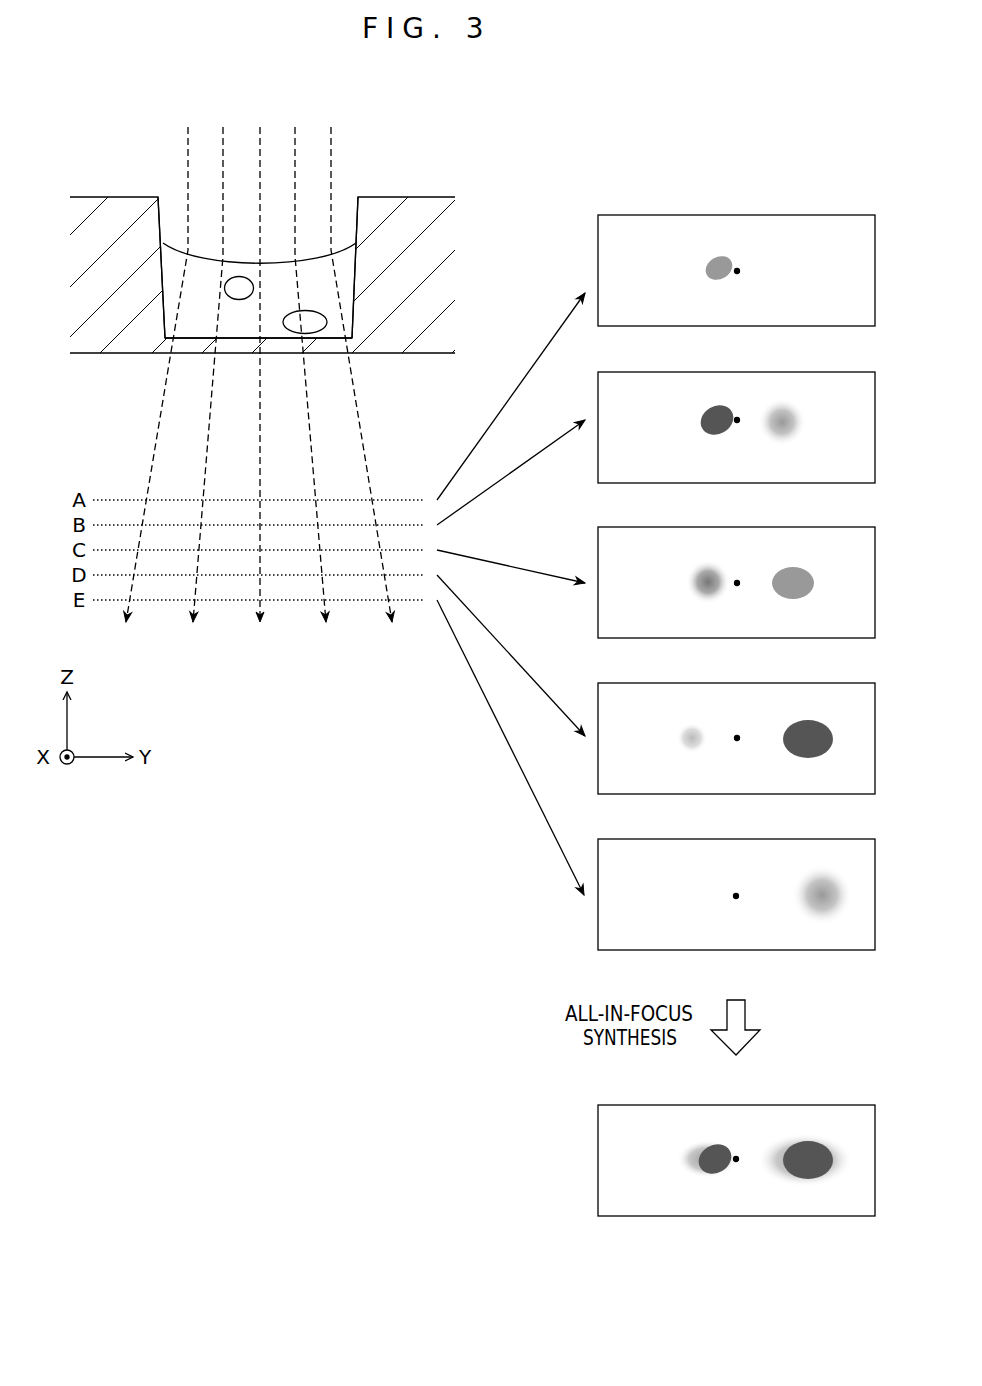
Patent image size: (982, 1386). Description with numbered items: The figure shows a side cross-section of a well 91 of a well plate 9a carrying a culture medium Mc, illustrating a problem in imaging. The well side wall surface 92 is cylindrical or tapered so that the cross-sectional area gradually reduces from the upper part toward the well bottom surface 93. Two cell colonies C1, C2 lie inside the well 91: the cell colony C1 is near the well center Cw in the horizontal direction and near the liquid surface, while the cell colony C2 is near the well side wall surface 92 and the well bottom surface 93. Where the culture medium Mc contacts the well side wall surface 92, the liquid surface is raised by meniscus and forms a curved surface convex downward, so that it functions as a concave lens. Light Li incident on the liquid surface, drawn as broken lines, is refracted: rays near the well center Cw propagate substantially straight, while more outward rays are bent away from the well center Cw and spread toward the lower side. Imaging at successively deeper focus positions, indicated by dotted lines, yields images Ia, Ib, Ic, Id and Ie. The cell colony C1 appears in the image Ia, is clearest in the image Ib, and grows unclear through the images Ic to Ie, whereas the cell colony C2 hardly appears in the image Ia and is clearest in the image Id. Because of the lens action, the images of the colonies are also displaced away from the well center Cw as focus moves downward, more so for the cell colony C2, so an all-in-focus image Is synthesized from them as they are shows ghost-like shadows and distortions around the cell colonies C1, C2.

The substrate 9a is at (433, 197).
The well 91 is at (343, 196).
The well side wall surface 92 is at (170, 197).
The well bottom surface 93 is at (185, 353).
The culture medium Mc is at (346, 275).
The light Li is at (336, 146).
The cell colony C1 is at (243, 300).
The cell colony C2 is at (323, 334).
The well center Cw is at (268, 362).
The image Ia is at (785, 215).
The image Ib is at (823, 371).
The image Ic is at (823, 526).
The image Id is at (823, 682).
The image Ie is at (833, 838).
The all-in-focus image Is is at (831, 1104).